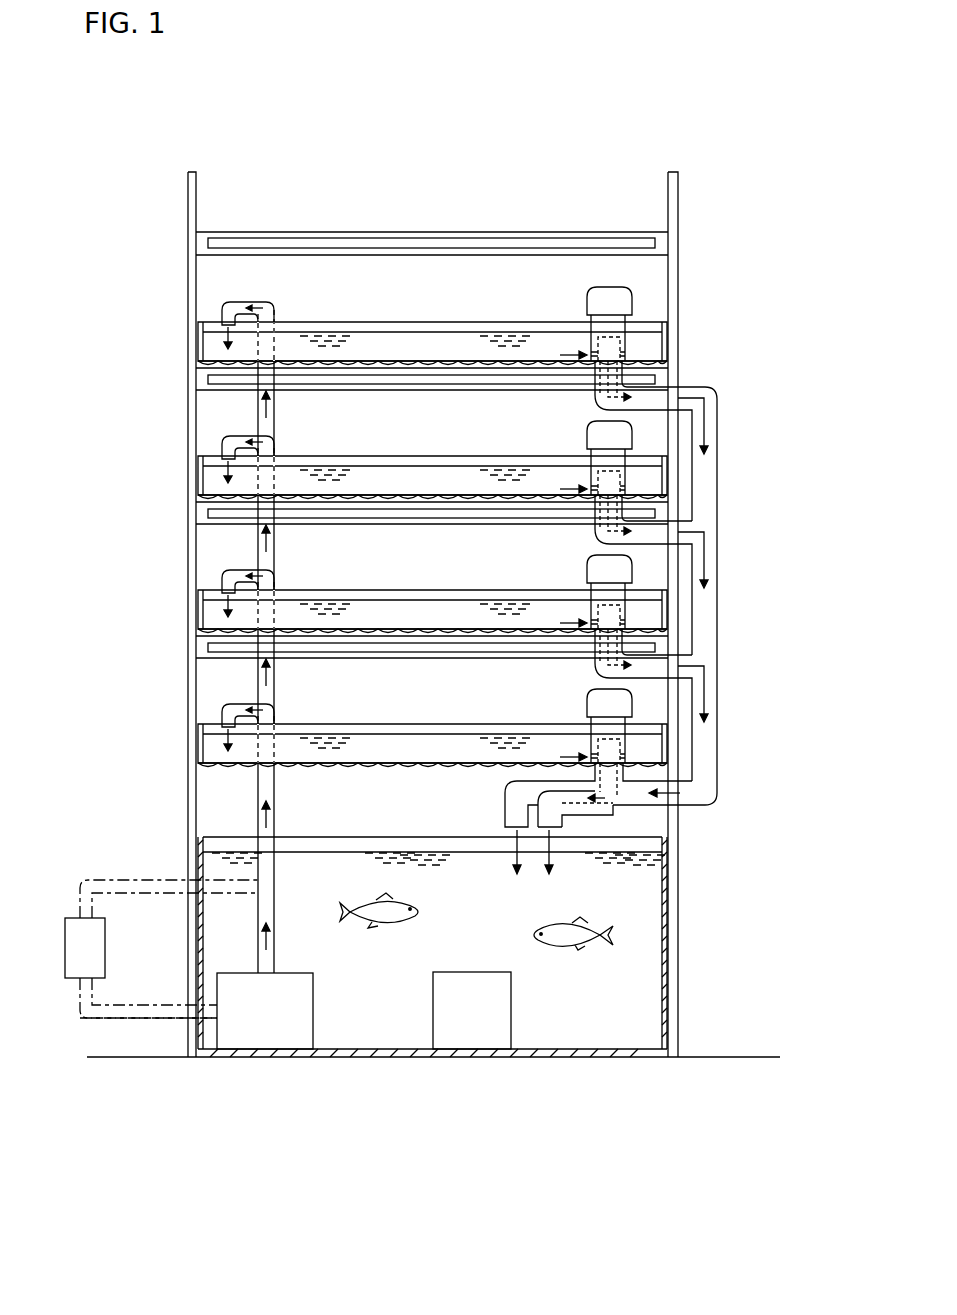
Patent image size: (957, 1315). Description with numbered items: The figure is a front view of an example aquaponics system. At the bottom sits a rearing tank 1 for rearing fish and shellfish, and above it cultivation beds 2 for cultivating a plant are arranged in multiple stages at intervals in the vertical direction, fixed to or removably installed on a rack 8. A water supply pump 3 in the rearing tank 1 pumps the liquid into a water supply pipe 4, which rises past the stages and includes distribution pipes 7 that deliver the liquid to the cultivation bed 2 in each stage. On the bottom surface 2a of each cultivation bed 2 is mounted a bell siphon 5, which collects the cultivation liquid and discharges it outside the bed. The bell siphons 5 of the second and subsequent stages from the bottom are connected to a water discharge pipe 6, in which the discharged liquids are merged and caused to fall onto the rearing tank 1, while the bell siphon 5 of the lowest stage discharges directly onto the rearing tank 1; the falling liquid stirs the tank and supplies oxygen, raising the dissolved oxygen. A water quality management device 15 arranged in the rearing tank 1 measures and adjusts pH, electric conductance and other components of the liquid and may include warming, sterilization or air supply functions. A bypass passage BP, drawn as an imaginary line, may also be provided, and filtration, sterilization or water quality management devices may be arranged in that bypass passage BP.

The rearing tank 1 is at (652, 960).
The cultivation bed 2 is at (198, 345).
The bottom surface 2a is at (383, 368).
The water supply pump 3 is at (276, 1026).
The water supply pipe 4 is at (258, 796).
The bell siphon 5 is at (632, 300).
The water discharge pipe 6 is at (717, 402).
The distribution pipe 7 is at (222, 305).
The rack 8 is at (188, 190).
The water quality management device 15 is at (490, 1022).
The bypass passage BP is at (102, 1022).